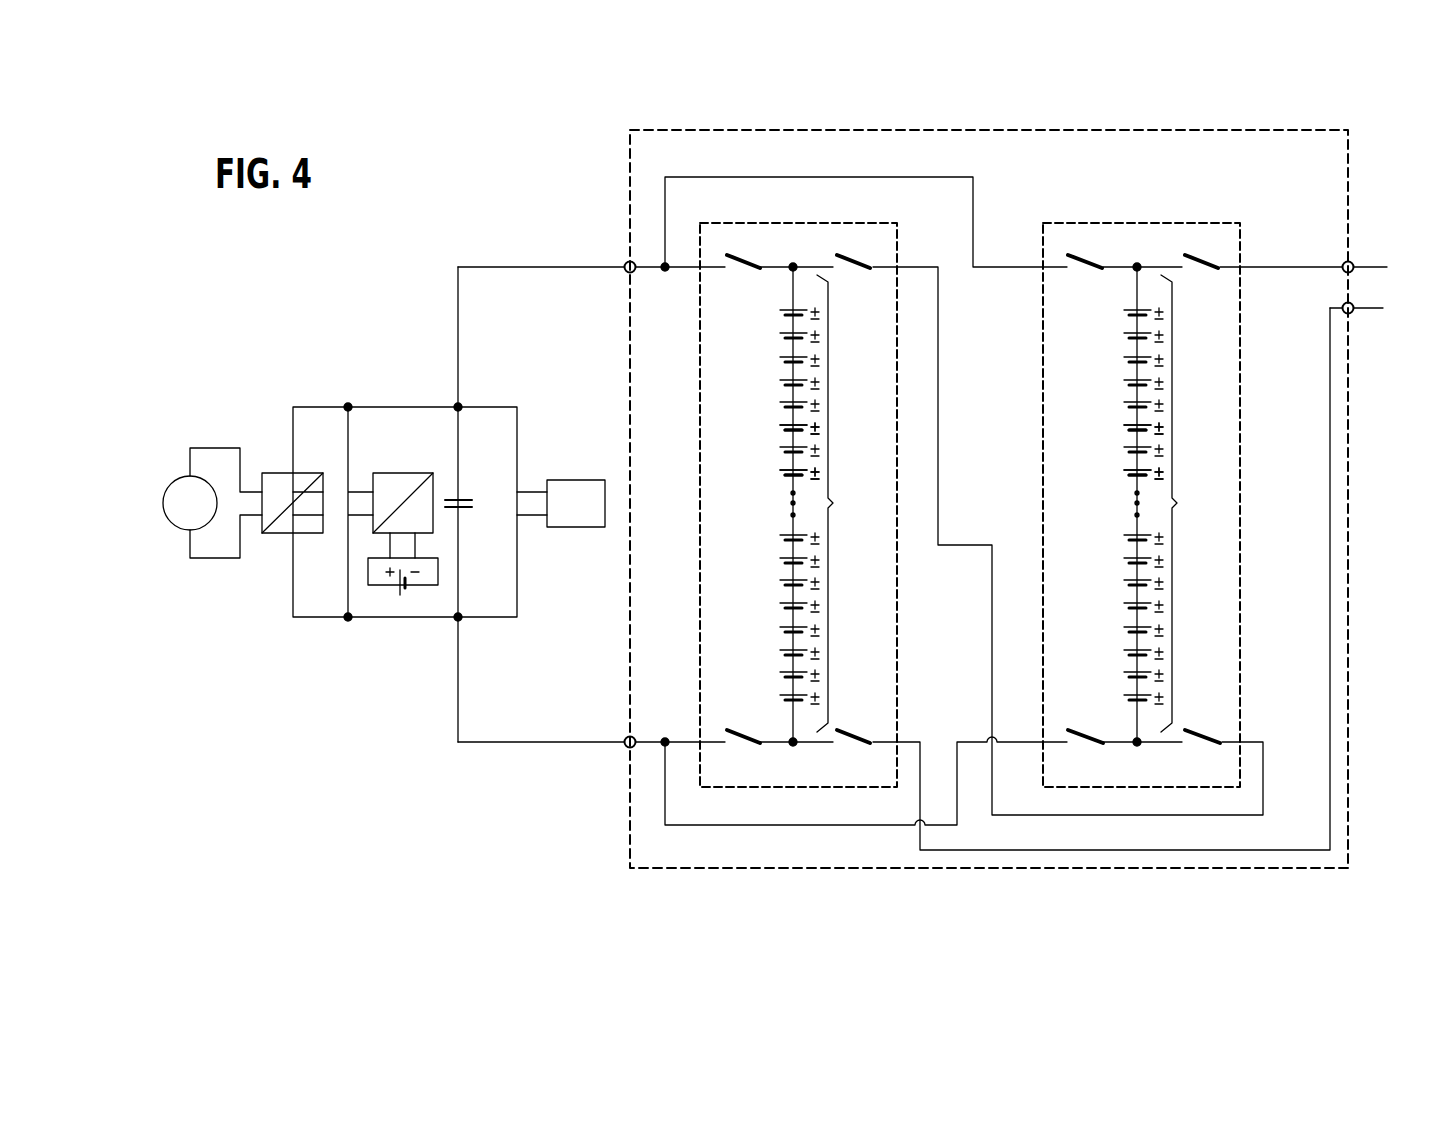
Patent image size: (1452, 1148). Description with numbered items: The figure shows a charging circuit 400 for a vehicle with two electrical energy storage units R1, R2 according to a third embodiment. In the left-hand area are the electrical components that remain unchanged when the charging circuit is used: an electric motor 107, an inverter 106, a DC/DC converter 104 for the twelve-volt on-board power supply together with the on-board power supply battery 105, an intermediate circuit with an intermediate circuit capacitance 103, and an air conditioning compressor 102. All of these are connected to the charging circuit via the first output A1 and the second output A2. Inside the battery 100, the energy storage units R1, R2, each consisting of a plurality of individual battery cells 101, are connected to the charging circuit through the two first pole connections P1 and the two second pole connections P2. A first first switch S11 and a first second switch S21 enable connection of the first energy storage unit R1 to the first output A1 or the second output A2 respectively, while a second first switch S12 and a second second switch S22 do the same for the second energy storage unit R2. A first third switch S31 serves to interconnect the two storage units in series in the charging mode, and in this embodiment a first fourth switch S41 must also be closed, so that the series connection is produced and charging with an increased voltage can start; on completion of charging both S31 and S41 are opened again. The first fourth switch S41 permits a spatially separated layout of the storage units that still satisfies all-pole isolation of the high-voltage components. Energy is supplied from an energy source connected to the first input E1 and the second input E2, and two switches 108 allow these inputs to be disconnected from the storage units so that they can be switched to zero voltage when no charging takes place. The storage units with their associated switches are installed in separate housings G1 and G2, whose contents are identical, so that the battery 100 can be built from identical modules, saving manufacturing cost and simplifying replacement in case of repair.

The battery 100 is at (630, 843).
The charging circuit 400 is at (430, 278).
The battery cells 101 is at (783, 422).
The air conditioning compressor 102 is at (565, 480).
The intermediate circuit capacitance 103 is at (463, 495).
The DC/DC converter 104 is at (410, 473).
The on-board power supply battery 105 is at (393, 592).
The inverter 106 is at (278, 473).
The electric motor 107 is at (190, 476).
The switches 108 is at (853, 728).
The first output A1 is at (626, 263).
The second output A2 is at (625, 748).
The first input E1 is at (1354, 262).
The second input E2 is at (1354, 314).
The housing G1 is at (897, 242).
The housing G2 is at (1043, 247).
The first pole connection P1 is at (793, 262).
The second pole connection P2 is at (790, 746).
The first electrical energy storage unit R1 is at (825, 504).
The second electrical energy storage unit R2 is at (1169, 504).
The first first switch S11 is at (747, 265).
The second first switch S12 is at (1088, 265).
The first second switch S21 is at (750, 737).
The second second switch S22 is at (1093, 737).
The first third switch S31 is at (853, 266).
The first fourth switch S41 is at (1197, 733).